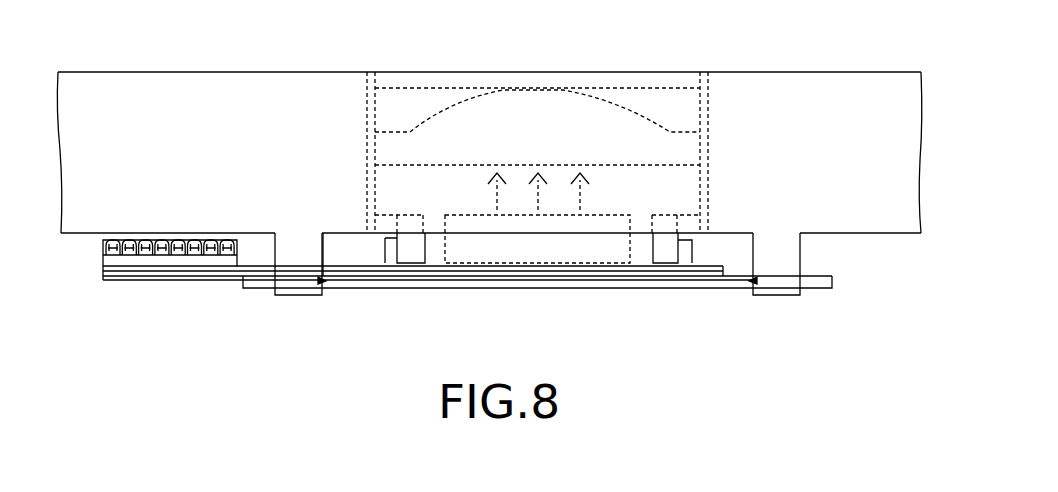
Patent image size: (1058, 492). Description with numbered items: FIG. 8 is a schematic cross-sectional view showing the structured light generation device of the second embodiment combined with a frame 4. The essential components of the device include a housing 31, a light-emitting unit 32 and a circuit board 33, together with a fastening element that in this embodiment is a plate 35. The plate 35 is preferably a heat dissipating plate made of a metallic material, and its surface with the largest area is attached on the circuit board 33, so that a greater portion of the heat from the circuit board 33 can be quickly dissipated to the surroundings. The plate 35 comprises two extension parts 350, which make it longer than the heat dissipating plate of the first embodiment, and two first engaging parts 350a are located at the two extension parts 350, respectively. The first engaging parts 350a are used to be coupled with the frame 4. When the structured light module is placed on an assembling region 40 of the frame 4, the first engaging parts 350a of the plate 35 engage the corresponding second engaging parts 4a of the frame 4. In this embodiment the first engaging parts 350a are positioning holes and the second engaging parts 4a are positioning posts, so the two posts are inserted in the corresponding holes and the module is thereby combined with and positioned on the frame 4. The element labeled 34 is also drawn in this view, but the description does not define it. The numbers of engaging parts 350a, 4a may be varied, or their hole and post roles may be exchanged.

The frame 4 is at (900, 193).
The second engaging parts 4a is at (300, 292).
The housing 31 is at (420, 102).
The light-emitting unit 32 is at (588, 250).
The circuit board 33 is at (170, 267).
The dome-shaped cover 34 is at (560, 117).
The plate 35 is at (492, 282).
The assembling region 40 is at (708, 136).
The extension parts 350 is at (255, 282).
The first engaging parts 350a is at (326, 280).